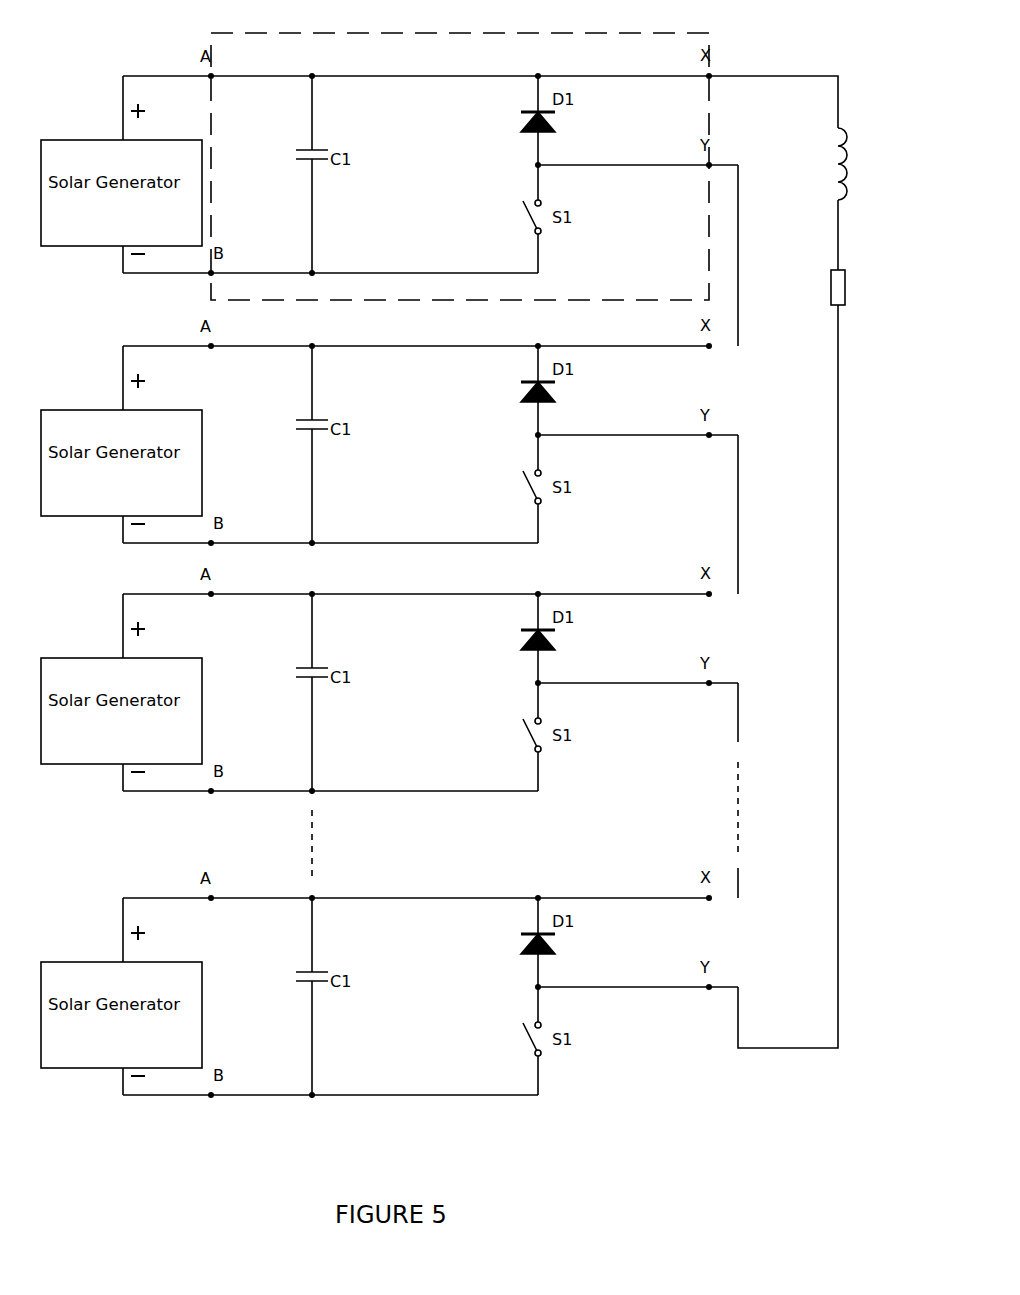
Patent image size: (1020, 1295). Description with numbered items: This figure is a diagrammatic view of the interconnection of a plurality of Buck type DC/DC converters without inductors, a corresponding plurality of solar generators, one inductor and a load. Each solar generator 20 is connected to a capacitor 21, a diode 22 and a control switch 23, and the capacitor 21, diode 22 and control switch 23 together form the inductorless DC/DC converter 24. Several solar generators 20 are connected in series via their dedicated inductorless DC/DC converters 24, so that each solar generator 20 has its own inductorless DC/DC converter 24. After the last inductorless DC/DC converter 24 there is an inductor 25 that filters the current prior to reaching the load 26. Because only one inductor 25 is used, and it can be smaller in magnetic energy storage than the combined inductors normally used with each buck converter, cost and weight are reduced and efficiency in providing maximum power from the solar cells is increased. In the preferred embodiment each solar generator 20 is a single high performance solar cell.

The solar generator 20 is at (121, 193).
The capacitor 21 is at (324, 174).
The diode 22 is at (539, 120).
The control switch 23 is at (537, 219).
The inductorless DC/DC converter 24 is at (460, 156).
The inductor 25 is at (857, 164).
The load 26 is at (864, 291).